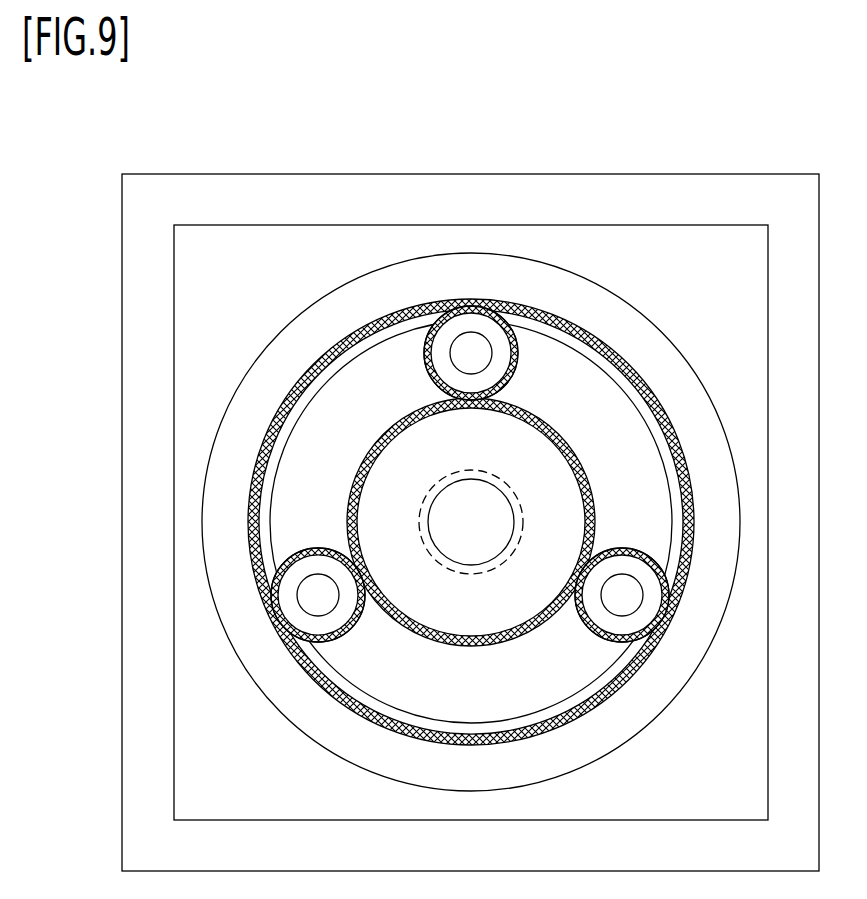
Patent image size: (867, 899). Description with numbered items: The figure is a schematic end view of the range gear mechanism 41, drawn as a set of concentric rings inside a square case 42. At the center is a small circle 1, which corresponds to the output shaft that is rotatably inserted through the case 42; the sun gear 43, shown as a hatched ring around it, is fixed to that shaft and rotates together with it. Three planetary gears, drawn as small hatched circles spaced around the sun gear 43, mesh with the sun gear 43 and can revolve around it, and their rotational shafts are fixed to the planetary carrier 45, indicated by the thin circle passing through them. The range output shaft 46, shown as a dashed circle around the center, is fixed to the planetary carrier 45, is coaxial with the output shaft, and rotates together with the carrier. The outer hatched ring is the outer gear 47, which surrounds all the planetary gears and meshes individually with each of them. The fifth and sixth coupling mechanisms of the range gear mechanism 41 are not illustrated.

The optical fiber 1 is at (471, 522).
The range gear mechanism 41 is at (751, 134).
The case 42 is at (783, 533).
The sun gear 43 is at (540, 533).
The planetary carrier 45 is at (460, 693).
The range output shaft 46 is at (462, 470).
The outer gear 47 is at (706, 533).